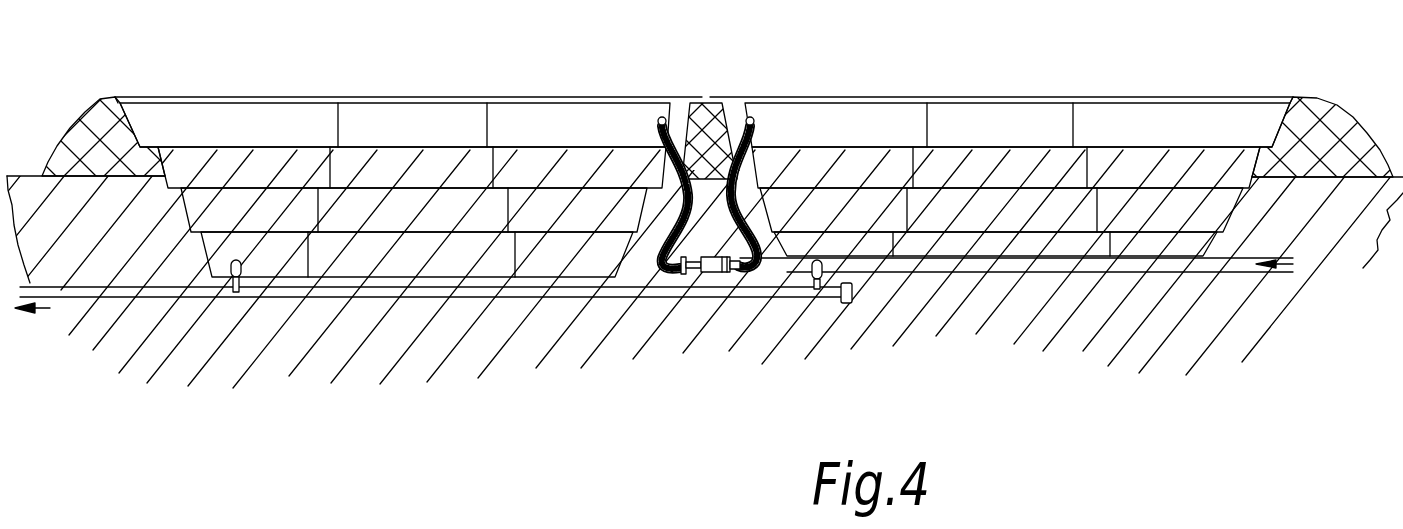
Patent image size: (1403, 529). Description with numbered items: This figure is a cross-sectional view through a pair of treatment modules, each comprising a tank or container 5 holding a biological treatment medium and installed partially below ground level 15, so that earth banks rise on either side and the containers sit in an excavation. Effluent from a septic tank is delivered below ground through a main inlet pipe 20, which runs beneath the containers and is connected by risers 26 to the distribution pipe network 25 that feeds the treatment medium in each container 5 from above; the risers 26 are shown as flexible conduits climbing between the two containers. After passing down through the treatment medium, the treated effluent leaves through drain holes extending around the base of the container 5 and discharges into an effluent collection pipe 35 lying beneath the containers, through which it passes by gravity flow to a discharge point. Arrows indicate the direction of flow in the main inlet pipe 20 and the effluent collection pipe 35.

The container 5 is at (421, 145).
The ground level 15 is at (110, 177).
The main inlet pipe 20 is at (1222, 260).
The distribution pipe network 25 is at (662, 117).
The riser 26 is at (756, 164).
The effluent collection pipe 35 is at (423, 292).